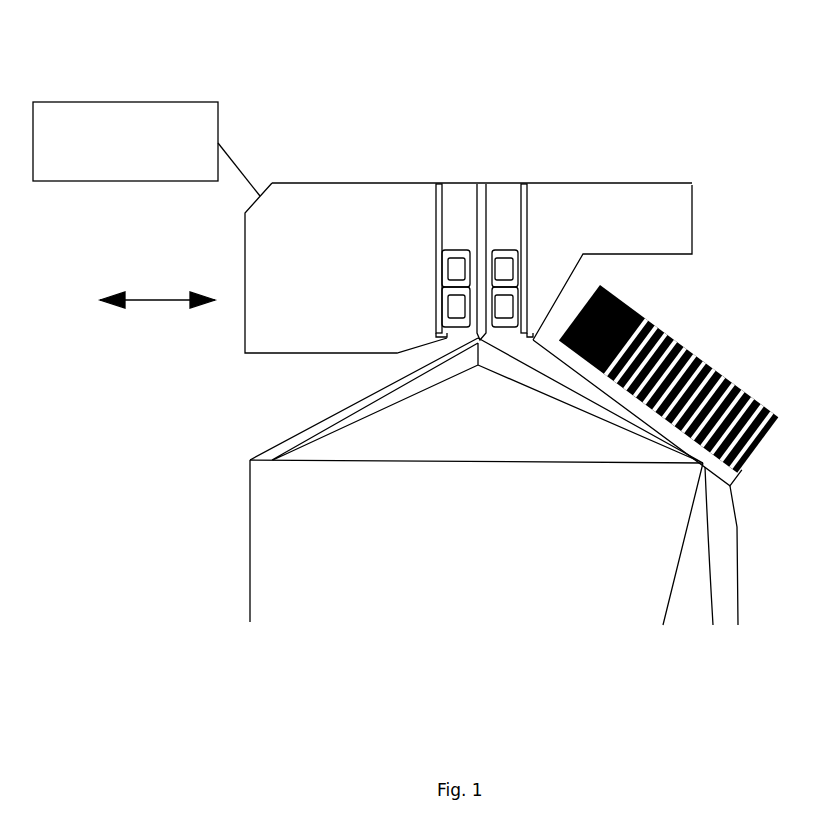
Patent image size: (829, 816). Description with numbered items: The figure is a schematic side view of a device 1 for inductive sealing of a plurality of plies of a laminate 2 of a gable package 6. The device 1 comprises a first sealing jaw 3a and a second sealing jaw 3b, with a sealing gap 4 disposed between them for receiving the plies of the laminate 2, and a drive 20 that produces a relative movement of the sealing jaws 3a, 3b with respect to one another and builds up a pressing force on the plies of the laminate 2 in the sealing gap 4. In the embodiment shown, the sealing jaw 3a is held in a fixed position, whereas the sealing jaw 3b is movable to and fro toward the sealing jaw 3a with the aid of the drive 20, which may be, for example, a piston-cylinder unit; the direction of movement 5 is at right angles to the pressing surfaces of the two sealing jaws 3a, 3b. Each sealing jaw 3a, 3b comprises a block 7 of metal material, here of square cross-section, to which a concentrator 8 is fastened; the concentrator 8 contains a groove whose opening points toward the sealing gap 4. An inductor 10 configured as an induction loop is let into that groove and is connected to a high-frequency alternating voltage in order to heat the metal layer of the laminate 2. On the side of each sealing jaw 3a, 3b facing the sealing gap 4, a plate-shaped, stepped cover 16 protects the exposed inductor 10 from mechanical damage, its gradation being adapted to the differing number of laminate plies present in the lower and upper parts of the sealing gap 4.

The device 1 is at (160, 598).
The laminate 2 is at (480, 300).
The first sealing jaw 3a is at (672, 215).
The second sealing jaw 3b is at (348, 268).
The sealing gap 4 is at (487, 190).
The direction of movement 5 is at (157, 303).
The gable package 6 is at (500, 550).
The block 7 is at (330, 203).
The concentrator 8 is at (460, 270).
The inductor 10 is at (450, 250).
The cover 16 is at (452, 205).
The drive 20 is at (163, 112).